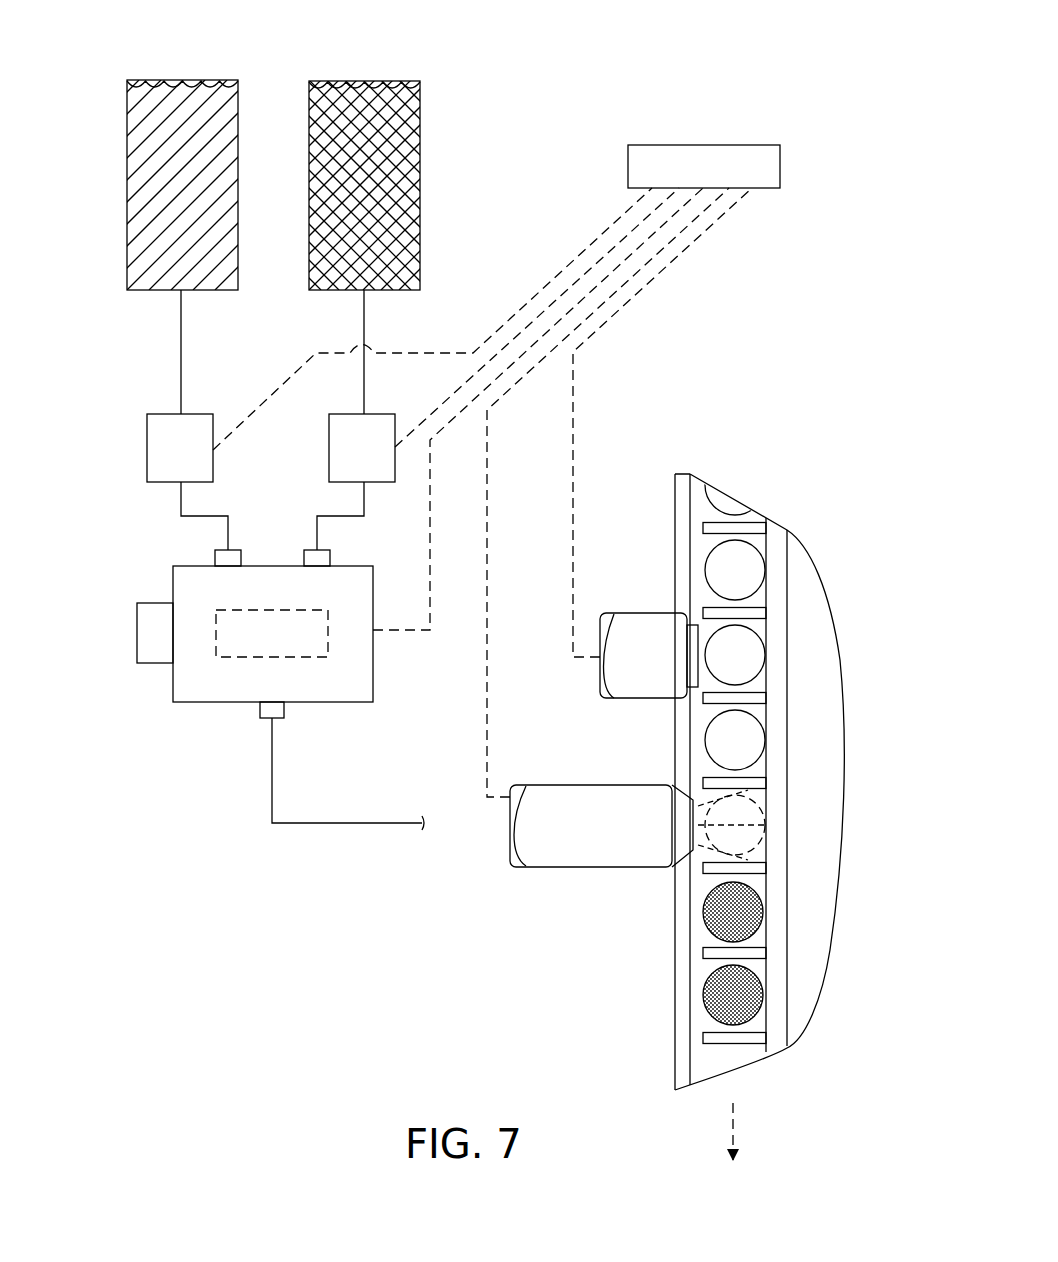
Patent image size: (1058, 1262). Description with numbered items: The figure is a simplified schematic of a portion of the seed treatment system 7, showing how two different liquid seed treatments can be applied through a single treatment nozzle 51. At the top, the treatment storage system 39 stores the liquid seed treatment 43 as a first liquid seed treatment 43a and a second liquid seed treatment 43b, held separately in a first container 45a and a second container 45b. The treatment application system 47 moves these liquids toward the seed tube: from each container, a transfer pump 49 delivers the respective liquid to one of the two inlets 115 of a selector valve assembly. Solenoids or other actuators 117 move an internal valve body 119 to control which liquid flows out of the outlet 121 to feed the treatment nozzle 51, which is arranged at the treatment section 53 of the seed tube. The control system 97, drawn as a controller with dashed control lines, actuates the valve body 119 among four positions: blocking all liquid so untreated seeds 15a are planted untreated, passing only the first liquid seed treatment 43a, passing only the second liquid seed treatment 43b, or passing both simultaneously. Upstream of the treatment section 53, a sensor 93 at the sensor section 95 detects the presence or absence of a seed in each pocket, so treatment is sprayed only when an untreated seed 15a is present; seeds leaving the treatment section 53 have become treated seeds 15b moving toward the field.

The seed treatment system 7 is at (674, 60).
The treatment storage system 39 is at (274, 76).
The liquid seed treatment 43 is at (146, 178).
The first liquid seed treatment 43a is at (137, 212).
The second liquid seed treatment 43b is at (408, 215).
The first container 45a is at (241, 176).
The second container 45b is at (351, 185).
The treatment application system 47 is at (256, 739).
The transfer pump 49 is at (193, 411).
The treatment nozzle 51 is at (573, 869).
The treatment section 53 is at (637, 883).
The sensor 93 is at (645, 616).
The sensor section 95 is at (638, 603).
The control system 97 is at (709, 130).
The inlets 115 is at (222, 552).
The actuator 117 is at (230, 634).
The valve body 119 is at (272, 610).
The outlet 121 is at (258, 708).
The untreated seeds 15a is at (731, 496).
The treated seeds 15b is at (757, 995).